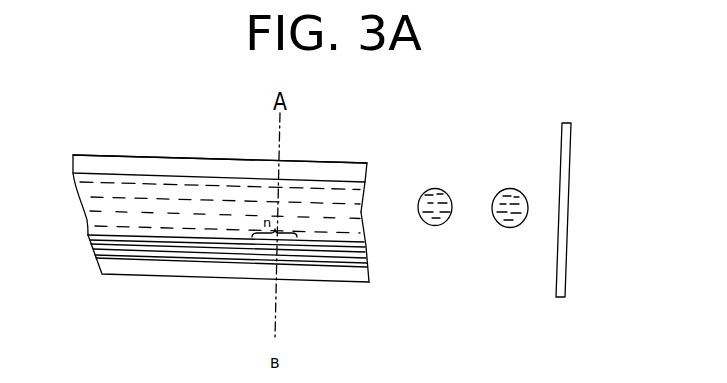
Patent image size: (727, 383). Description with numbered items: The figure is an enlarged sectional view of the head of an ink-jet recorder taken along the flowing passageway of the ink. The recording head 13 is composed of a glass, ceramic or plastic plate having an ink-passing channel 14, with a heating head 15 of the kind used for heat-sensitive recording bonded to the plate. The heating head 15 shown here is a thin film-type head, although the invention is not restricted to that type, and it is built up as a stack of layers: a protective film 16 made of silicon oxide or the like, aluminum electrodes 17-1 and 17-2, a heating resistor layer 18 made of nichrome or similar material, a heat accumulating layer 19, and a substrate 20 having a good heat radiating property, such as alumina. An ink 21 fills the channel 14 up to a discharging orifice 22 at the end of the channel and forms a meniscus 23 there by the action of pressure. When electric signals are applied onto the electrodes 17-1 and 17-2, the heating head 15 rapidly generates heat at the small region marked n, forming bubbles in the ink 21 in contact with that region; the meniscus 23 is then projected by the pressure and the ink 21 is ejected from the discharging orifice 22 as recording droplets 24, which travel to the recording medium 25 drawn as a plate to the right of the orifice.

The recording head 13 is at (195, 158).
The ink-passing channel 14 is at (232, 177).
The ink 21 is at (115, 173).
The heating head 15 is at (210, 282).
The protective film 16 is at (143, 253).
The aluminum electrode 17-1 is at (187, 253).
The aluminum electrode 17-2 is at (340, 262).
The heating resistor layer 18 is at (226, 255).
The heat accumulating layer 19 is at (257, 257).
The substrate 20 is at (308, 268).
The discharging orifice 22 is at (368, 216).
The meniscus 23 is at (361, 212).
The recording droplets 24 is at (528, 192).
The recording medium 25 is at (559, 133).